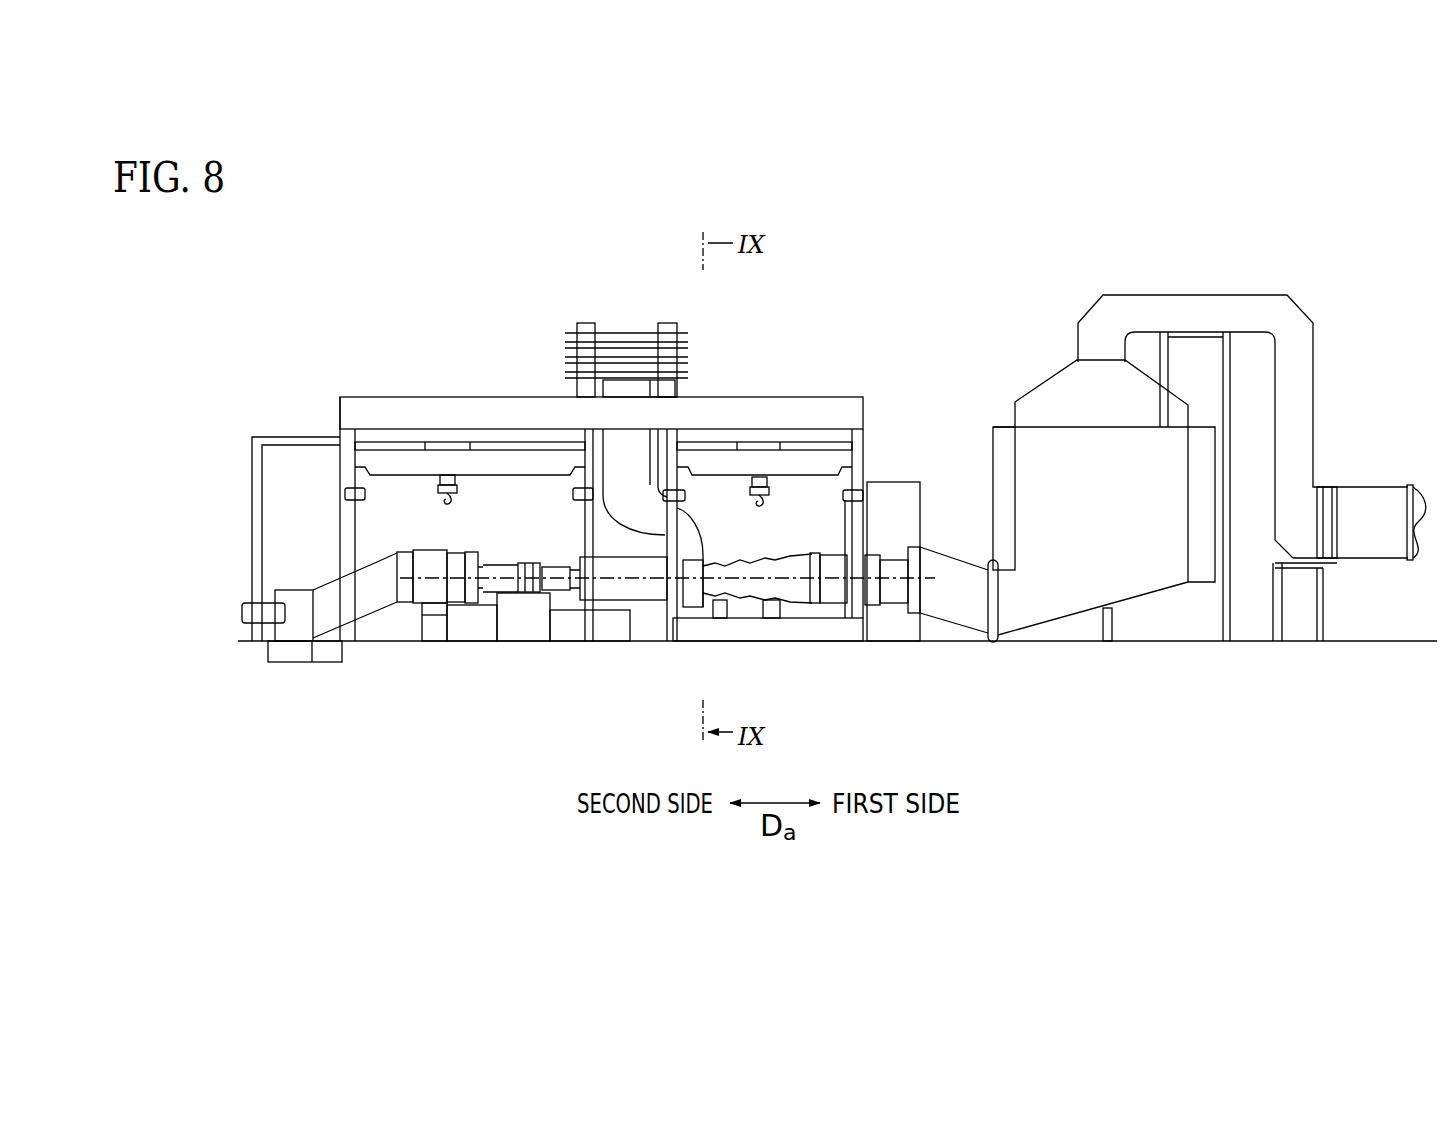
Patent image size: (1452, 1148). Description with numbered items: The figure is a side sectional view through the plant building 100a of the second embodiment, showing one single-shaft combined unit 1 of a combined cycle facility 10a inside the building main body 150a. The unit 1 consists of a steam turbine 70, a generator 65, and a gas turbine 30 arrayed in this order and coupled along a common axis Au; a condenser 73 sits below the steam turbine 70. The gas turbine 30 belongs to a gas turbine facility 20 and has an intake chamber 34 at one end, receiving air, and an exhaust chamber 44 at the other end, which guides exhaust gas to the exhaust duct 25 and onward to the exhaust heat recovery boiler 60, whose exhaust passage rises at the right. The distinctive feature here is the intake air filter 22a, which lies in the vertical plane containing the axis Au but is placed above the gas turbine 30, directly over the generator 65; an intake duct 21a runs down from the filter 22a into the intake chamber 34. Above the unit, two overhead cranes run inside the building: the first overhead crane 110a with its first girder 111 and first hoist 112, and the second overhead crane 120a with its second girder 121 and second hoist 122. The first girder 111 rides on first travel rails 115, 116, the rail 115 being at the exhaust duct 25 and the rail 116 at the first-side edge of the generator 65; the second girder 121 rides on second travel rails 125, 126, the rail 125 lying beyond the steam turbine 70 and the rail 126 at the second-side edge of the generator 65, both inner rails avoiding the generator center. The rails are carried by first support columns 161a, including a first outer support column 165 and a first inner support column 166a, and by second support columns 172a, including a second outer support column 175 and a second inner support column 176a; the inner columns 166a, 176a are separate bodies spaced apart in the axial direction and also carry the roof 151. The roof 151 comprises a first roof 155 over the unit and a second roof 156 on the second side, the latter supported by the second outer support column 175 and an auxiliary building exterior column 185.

The plant building 100a is at (785, 474).
The building main body 150a is at (566, 479).
The second overhead crane 120a is at (385, 359).
The first overhead crane 110a is at (776, 369).
The roof 151 is at (397, 446).
The first roof 155 is at (410, 397).
The second support column 172a is at (498, 396).
The second outer support column 175 is at (340, 432).
The second inner support column 176a is at (584, 437).
The first inner support column 166a is at (668, 438).
The first support column 161a is at (926, 462).
The first outer support column 165 is at (863, 443).
The second hoist 122 is at (445, 445).
The second girder 121 is at (490, 463).
The second travel rail 125 is at (350, 505).
The first hoist 112 is at (760, 443).
The first girder 111 is at (795, 467).
The first travel rail 115 is at (847, 620).
The second roof 156 is at (273, 437).
The auxiliary building exterior column 185 is at (253, 553).
The condenser 73 is at (270, 647).
The single-shaft combined unit 1 is at (372, 553).
The steam turbine 70 is at (459, 607).
The second travel rail 126 is at (553, 598).
The generator 65 is at (603, 609).
The first travel rail 116 is at (650, 600).
The intake air filter 22a is at (606, 323).
The intake duct 21a is at (640, 490).
The intake chamber 34 is at (678, 610).
The gas turbine facility 20 is at (768, 635).
The gas turbine 30 is at (757, 609).
The exhaust chamber 44 is at (818, 605).
The exhaust duct 25 is at (935, 622).
The axis Au is at (928, 578).
The exhaust heat recovery boiler 60 is at (1068, 358).
The combined cycle facility 10a is at (1315, 292).